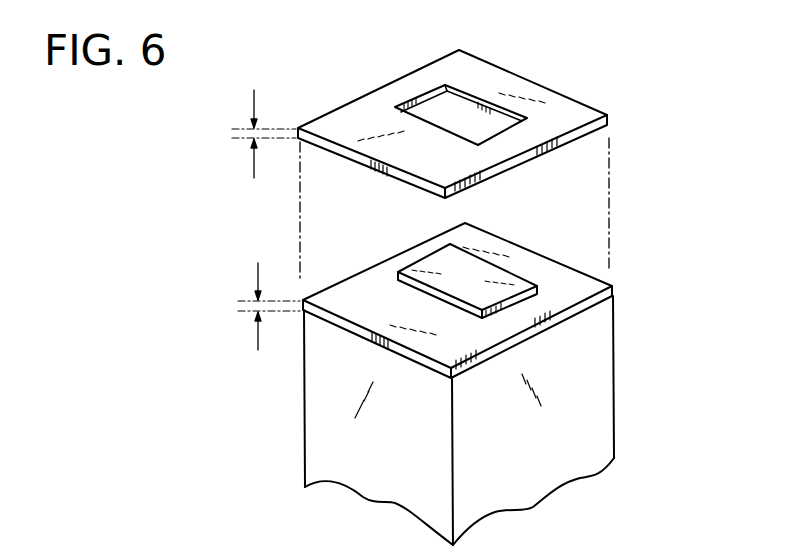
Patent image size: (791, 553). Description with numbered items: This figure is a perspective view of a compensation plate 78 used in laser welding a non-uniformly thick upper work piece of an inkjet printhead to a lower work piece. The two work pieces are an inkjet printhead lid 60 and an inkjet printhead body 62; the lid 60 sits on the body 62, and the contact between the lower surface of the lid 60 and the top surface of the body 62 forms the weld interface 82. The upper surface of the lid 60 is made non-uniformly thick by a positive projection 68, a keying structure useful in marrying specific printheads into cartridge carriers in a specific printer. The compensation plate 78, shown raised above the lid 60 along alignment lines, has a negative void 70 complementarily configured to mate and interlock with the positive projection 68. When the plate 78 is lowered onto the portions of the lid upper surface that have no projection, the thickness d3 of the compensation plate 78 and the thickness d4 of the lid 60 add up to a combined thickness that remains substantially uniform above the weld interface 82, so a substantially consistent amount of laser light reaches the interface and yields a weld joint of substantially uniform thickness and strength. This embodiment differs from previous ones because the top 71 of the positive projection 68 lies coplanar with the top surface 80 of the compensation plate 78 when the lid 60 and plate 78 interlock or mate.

The inkjet printhead lid 60 is at (613, 288).
The inkjet printhead body 62 is at (597, 363).
The positive projection 68 is at (510, 280).
The negative void 70 is at (465, 118).
The top of the positive projection 71 is at (478, 287).
The compensation plate 78 is at (609, 118).
The top surface of the compensation plate 80 is at (353, 122).
The weld interface 82 is at (598, 302).
The thickness of the compensation plate d3 is at (243, 137).
The thickness of the lid d4 is at (238, 308).